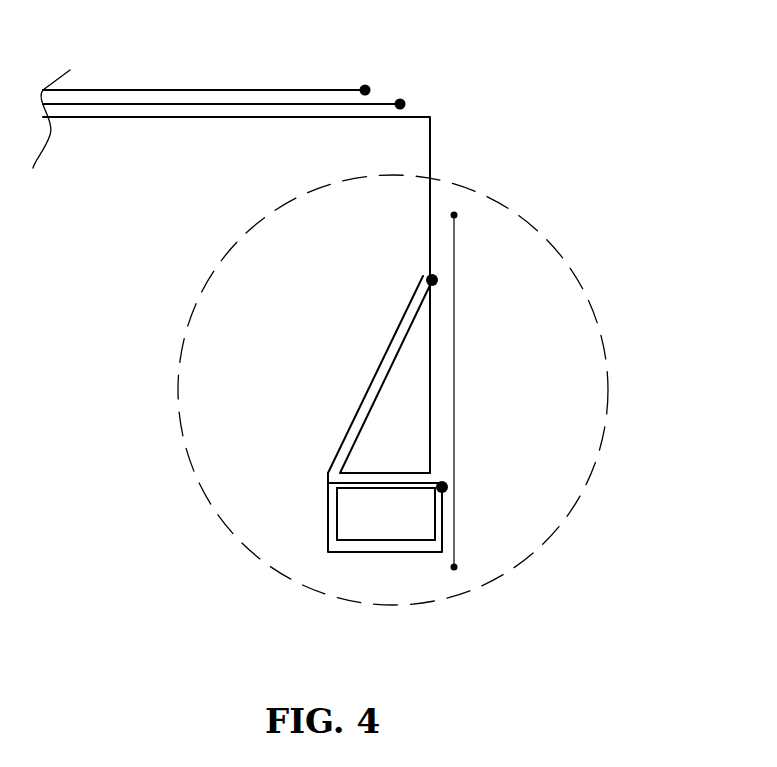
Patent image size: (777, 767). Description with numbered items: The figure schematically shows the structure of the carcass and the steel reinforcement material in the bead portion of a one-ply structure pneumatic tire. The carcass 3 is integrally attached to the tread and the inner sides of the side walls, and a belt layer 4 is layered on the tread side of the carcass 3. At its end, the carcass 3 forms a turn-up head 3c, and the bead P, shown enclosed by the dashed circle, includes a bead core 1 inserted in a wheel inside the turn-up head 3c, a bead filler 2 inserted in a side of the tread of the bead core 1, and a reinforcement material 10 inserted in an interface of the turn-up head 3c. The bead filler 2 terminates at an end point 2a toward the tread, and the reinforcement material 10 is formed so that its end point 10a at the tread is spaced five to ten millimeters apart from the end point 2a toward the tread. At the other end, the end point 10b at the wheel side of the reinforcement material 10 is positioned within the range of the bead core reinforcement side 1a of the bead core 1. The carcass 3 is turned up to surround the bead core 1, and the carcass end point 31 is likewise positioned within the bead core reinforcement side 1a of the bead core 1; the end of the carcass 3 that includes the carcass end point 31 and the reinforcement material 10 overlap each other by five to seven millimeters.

The bead core 1 is at (350, 526).
The bead core reinforcement side 1a is at (436, 516).
The bead filler 2 is at (388, 406).
The end point of the bead filler 2a is at (426, 280).
The carcass 3 is at (272, 118).
The turn-up head 3c is at (468, 504).
The belt layer 4 is at (205, 104).
The reinforcement material 10 is at (454, 316).
The end point of the reinforcement material at the tread 10a is at (455, 213).
The end point of the reinforcement material at the wheel side 10b is at (455, 568).
The carcass end point 31 is at (445, 486).
The bead P is at (195, 440).